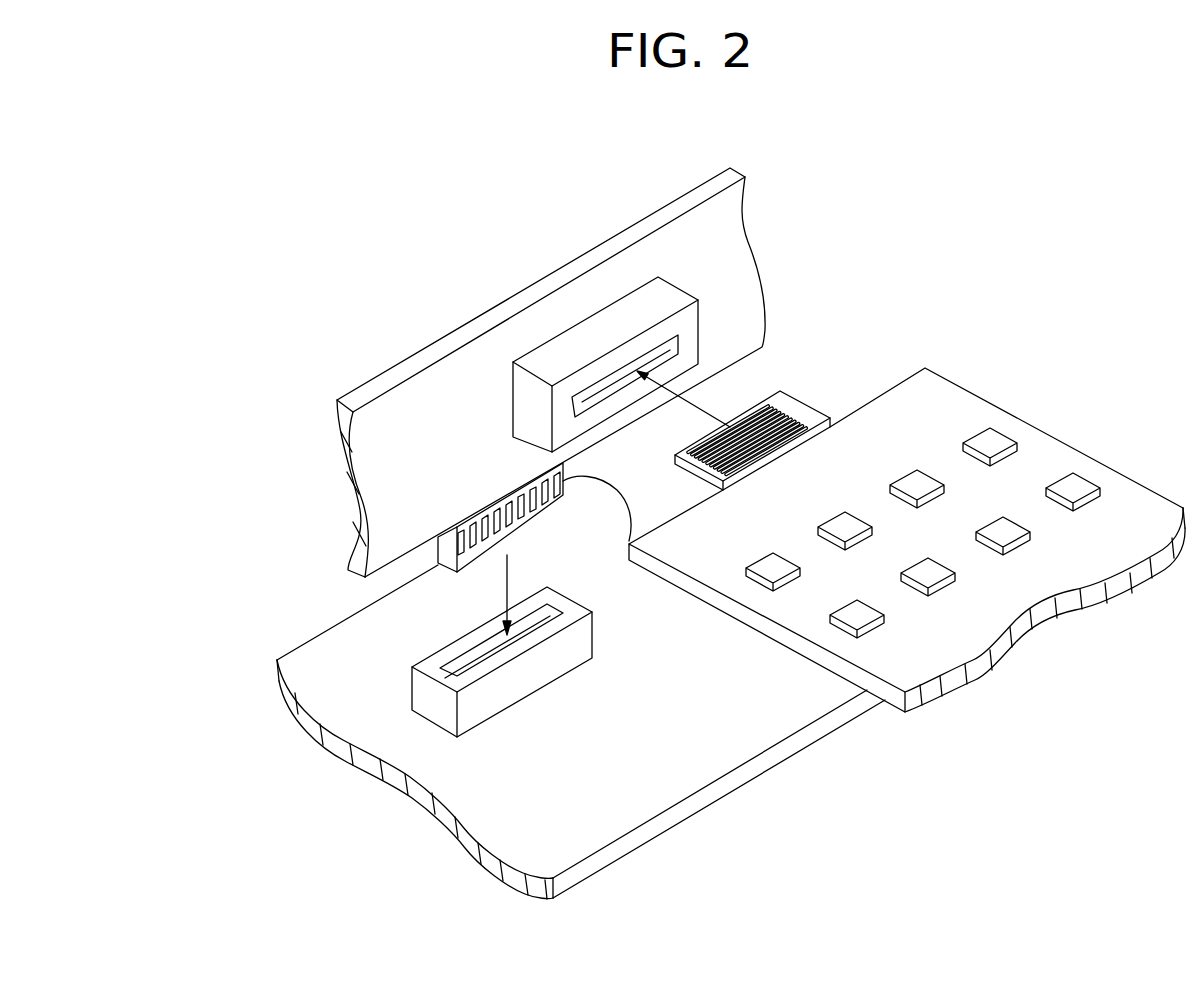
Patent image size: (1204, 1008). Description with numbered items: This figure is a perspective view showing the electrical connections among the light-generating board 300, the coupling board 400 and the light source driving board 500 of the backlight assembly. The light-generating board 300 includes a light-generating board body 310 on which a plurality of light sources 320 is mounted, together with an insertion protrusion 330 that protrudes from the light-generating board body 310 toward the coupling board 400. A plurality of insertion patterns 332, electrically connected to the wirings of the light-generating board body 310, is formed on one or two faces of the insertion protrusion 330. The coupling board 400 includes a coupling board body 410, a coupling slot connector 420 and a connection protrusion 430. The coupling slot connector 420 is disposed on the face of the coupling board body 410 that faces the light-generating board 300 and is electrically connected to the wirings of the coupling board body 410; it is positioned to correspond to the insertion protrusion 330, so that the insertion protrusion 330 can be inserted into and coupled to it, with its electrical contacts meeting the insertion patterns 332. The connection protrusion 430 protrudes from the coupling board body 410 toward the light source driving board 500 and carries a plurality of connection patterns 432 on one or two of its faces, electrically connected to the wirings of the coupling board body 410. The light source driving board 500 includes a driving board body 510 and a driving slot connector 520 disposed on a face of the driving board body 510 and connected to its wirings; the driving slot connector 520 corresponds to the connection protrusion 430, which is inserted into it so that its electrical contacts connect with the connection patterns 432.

The light-generating board 300 is at (970, 316).
The light-generating board body 310 is at (880, 413).
The light sources 320 is at (993, 438).
The insertion protrusion 330 is at (773, 401).
The insertion patterns 332 is at (760, 447).
The coupling board 400 is at (232, 419).
The coupling board body 410 is at (376, 426).
The coupling slot connector 420 is at (527, 410).
The connection protrusion 430 is at (401, 539).
The connection patterns 432 is at (480, 553).
The light source driving board 500 is at (240, 761).
The driving board body 510 is at (478, 790).
The driving slot connector 520 is at (430, 690).